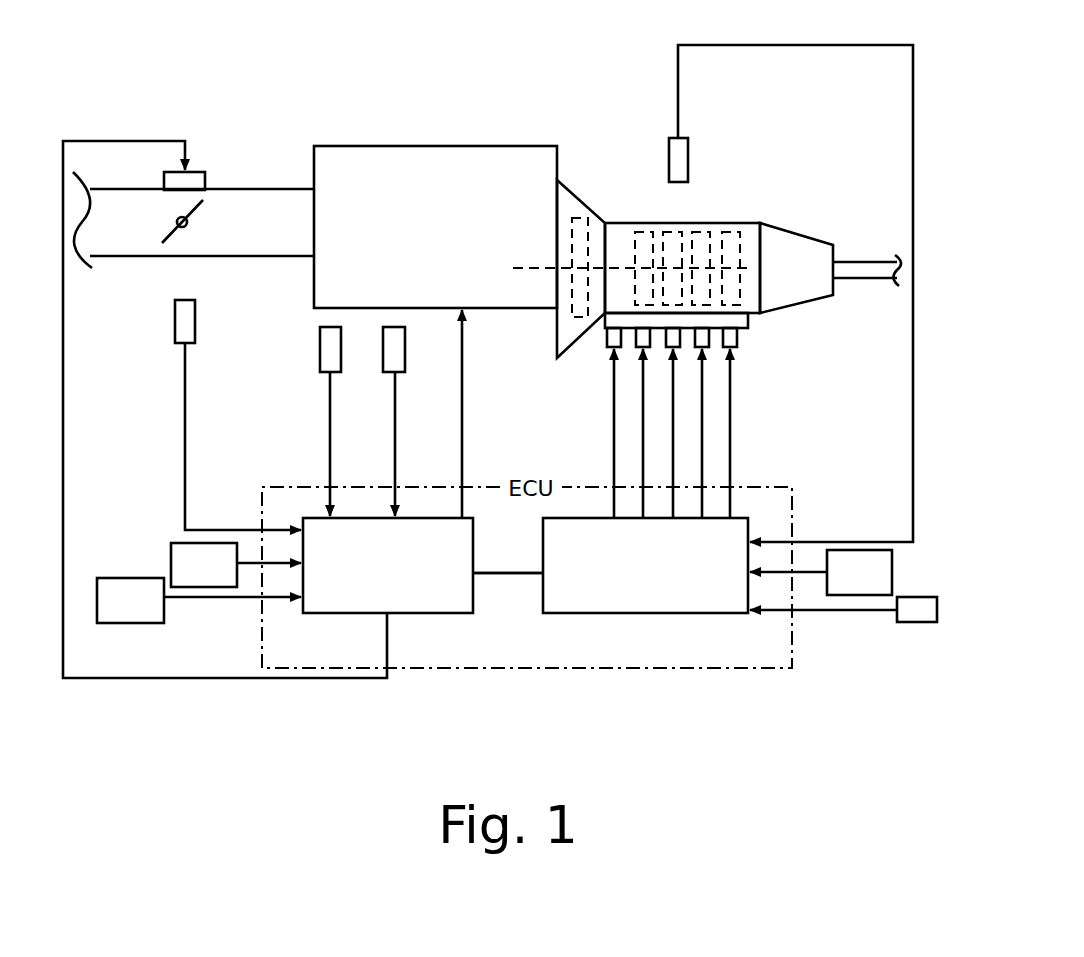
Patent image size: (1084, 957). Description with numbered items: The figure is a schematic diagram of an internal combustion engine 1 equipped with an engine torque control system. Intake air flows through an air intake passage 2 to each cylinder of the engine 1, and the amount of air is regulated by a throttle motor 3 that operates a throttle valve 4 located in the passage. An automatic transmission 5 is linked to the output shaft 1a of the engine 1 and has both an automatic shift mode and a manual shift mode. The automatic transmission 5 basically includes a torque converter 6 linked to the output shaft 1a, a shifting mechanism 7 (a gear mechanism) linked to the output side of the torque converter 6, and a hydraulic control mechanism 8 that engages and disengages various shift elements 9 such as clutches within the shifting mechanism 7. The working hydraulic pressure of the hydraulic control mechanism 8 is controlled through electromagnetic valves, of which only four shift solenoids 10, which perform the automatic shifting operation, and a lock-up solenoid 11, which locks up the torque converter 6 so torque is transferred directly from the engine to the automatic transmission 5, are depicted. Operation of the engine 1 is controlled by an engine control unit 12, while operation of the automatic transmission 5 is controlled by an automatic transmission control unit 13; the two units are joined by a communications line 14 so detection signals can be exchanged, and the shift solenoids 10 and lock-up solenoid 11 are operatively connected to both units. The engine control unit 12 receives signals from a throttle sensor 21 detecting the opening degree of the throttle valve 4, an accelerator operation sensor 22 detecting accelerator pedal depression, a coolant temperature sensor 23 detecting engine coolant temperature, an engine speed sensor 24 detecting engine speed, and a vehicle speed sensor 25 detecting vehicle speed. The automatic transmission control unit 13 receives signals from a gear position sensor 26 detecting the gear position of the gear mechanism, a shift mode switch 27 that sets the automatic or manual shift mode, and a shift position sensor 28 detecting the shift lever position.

The internal combustion engine 1 is at (435, 207).
The output shaft 1a is at (604, 238).
The air intake passage 2 is at (193, 208).
The throttle motor 3 is at (200, 163).
The throttle valve 4 is at (200, 253).
The automatic transmission 5 is at (682, 208).
The torque converter 6 is at (581, 240).
The shifting mechanism 7 is at (830, 246).
The hydraulic control mechanism 8 is at (703, 330).
The shift elements 9 is at (687, 230).
The shift solenoids 10 is at (700, 350).
The lock-up solenoid 11 is at (644, 433).
The engine control unit 12 is at (390, 592).
The automatic transmission control unit 13 is at (645, 592).
The communications line 14 is at (508, 619).
The throttle sensor 21 is at (238, 415).
The accelerator operation sensor 22 is at (199, 624).
The coolant temperature sensor 23 is at (355, 421).
The engine speed sensor 24 is at (417, 421).
The vehicle speed sensor 25 is at (207, 555).
The gear position sensor 26 is at (700, 146).
The shift mode switch 27 is at (843, 637).
The shift position sensor 28 is at (849, 572).